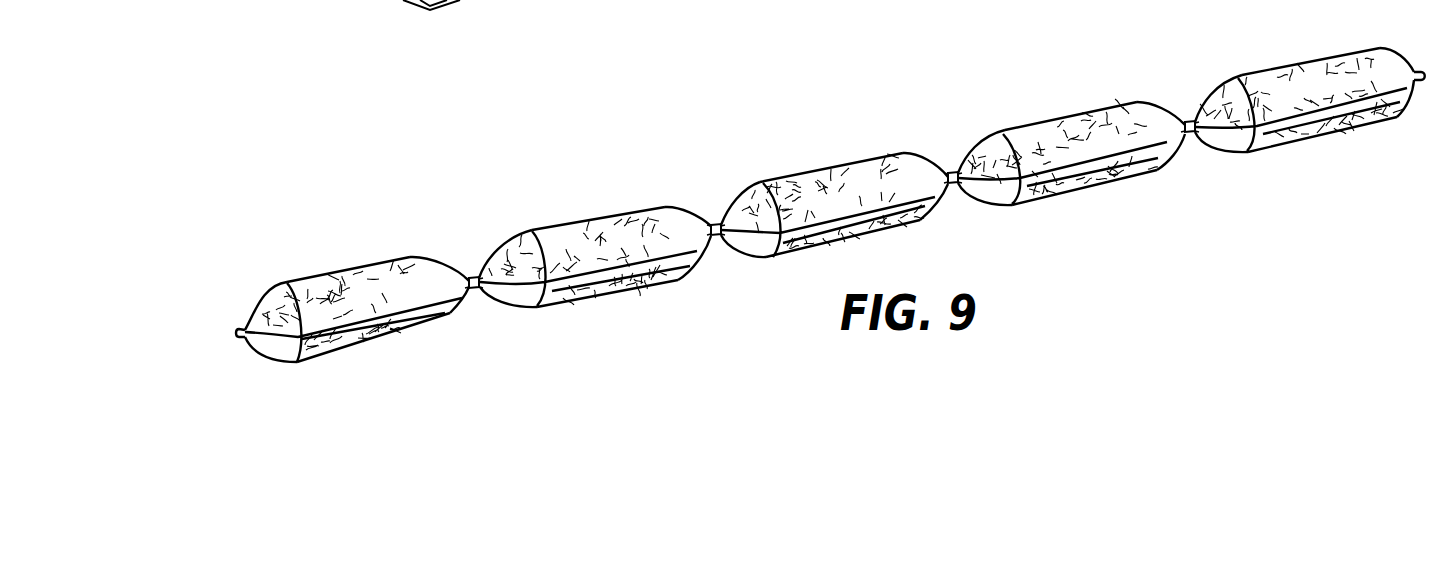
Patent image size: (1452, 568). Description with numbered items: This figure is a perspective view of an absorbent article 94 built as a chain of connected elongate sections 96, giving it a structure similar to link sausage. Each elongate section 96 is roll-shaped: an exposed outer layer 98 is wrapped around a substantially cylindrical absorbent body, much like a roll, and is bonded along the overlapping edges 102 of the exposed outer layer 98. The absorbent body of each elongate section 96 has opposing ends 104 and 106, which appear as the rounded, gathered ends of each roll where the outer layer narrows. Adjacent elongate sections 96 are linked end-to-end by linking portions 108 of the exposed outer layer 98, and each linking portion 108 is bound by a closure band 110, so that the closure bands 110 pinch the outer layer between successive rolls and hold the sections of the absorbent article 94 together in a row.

The absorbent article 94 is at (1093, 62).
The elongate section 96 is at (520, 231).
The exposed outer layer 98 is at (372, 265).
The overlapping edges 102 is at (357, 326).
The opposing end 104 is at (243, 297).
The opposing end 106 is at (444, 258).
The linking portion 108 is at (474, 289).
The closure band 110 is at (482, 290).